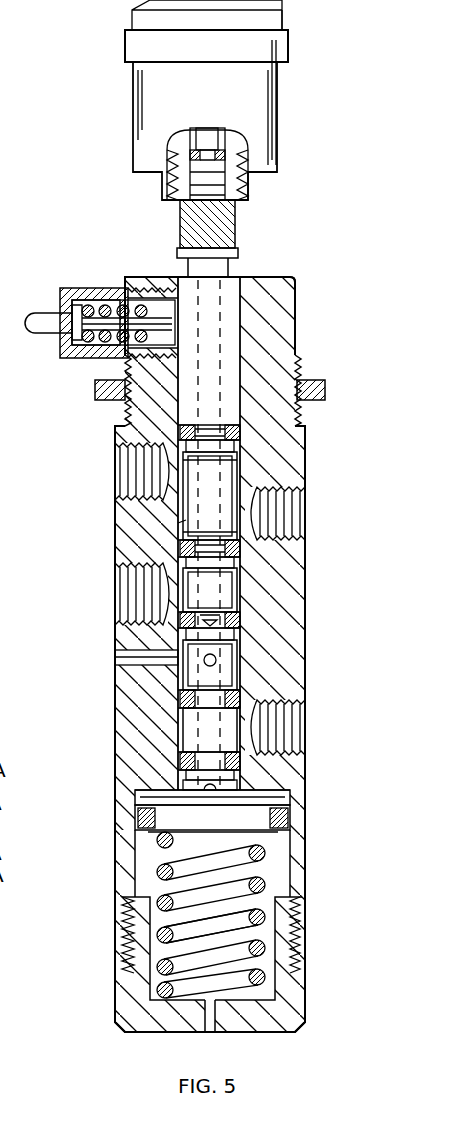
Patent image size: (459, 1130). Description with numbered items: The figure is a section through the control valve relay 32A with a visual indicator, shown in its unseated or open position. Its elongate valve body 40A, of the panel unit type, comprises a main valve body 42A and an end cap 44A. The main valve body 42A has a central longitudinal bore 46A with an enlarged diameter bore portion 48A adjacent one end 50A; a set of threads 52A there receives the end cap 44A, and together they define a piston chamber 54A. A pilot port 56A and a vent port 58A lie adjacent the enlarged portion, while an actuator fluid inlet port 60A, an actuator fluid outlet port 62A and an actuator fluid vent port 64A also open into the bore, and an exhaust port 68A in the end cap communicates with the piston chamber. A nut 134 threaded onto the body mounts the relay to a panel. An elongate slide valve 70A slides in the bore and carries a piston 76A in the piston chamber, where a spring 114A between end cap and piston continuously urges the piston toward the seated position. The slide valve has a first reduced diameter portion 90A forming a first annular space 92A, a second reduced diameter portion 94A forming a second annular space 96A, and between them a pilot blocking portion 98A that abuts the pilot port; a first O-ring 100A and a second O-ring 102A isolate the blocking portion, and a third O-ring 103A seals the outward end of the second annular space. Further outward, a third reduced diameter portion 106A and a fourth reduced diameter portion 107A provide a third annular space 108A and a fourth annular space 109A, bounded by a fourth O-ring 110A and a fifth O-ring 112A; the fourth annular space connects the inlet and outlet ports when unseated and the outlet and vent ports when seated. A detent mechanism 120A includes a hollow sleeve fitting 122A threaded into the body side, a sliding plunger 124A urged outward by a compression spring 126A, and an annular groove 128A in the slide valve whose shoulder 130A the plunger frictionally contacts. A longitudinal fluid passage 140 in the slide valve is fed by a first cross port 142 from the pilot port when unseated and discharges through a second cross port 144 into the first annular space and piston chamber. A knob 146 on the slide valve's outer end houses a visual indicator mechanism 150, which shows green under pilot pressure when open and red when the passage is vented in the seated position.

The control valve relay 32A is at (296, 281).
The elongate valve body 40A is at (115, 428).
The main valve body 42A is at (130, 523).
The end cap 44A is at (140, 1015).
The central longitudinal bore 46A is at (233, 463).
The enlarged diameter bore portion 48A is at (140, 862).
The end of main valve body 50A is at (302, 975).
The set of threads 52A is at (302, 918).
The piston chamber 54A is at (280, 853).
The pilot port 56A is at (305, 728).
The vent port 58A is at (118, 657).
The actuator fluid inlet port 60A is at (122, 578).
The actuator fluid outlet port 62A is at (305, 512).
The actuator fluid vent port 64A is at (122, 460).
The exhaust port 68A is at (213, 1028).
The slide valve 70A is at (233, 411).
The piston 76A is at (280, 802).
The first reduced diameter portion 90A is at (180, 786).
The first annular space 92A is at (180, 777).
The second reduced diameter portion 94A is at (242, 660).
The second annular space 96A is at (180, 678).
The pilot blocking portion 98A is at (180, 733).
The first O-ring 100A is at (243, 768).
The second O-ring 102A is at (240, 703).
The third O-ring 103A is at (180, 623).
The third reduced diameter portion 106A is at (240, 580).
The fourth reduced diameter portion 107A is at (233, 483).
The third annular space 108A is at (240, 603).
The fourth annular space 109A is at (180, 520).
The fourth O-ring 110A is at (243, 552).
The fifth O-ring 112A is at (240, 434).
The spring 114A is at (265, 948).
The detent mechanism 120A is at (59, 286).
The hollow sleeve fitting 122A is at (90, 297).
The sliding plunger 124A is at (40, 320).
The compression spring 126A is at (88, 342).
The annular groove 128A is at (185, 262).
The shoulder 130A is at (235, 262).
The nut 134 is at (322, 390).
The fluid passage 140 is at (210, 312).
The first cross port 142 is at (217, 660).
The second cross port 144 is at (242, 783).
The knob 146 is at (288, 38).
The visual indicator mechanism 150 is at (232, 137).